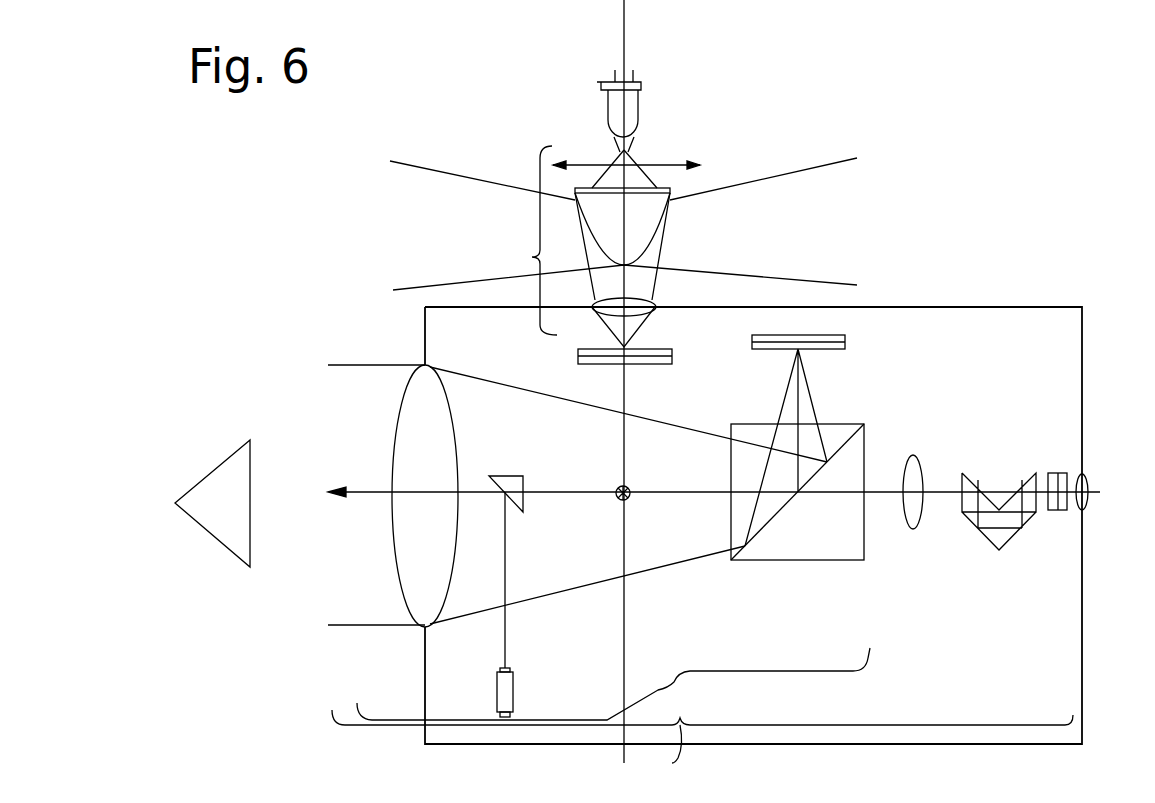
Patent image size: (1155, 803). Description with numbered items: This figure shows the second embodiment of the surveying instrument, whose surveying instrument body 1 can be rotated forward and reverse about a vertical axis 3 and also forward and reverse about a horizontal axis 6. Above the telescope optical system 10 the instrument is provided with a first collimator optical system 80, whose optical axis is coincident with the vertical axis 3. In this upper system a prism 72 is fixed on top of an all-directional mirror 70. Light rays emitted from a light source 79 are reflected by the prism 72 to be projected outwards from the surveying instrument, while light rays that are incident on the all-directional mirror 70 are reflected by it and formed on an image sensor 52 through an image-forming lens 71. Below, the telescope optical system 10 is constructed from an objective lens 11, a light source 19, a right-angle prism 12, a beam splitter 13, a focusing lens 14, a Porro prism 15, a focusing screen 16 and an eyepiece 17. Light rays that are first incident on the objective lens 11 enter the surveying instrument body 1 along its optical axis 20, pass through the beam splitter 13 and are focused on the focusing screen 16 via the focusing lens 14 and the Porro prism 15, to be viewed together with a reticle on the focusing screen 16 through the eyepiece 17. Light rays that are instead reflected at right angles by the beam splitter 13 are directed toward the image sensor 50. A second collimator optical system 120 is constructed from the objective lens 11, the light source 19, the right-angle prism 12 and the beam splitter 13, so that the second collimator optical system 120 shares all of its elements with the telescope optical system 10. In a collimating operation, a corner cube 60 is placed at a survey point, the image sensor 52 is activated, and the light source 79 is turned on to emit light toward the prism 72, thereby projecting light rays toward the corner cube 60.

The surveying instrument body 1 is at (855, 745).
The vertical axis 3 is at (626, 58).
The horizontal axis 6 is at (615, 487).
The telescope optical system 10 is at (702, 752).
The objective lens 11 is at (400, 597).
The right-angle prism 12 is at (520, 515).
The beam splitter 13 is at (864, 548).
The focusing lens 14 is at (914, 530).
The Porro prism 15 is at (990, 540).
The focusing screen 16 is at (1048, 512).
The eyepiece 17 is at (1078, 512).
The light source 19 is at (513, 672).
The optical axis 20 is at (618, 500).
The image sensor 50 is at (820, 350).
The image sensor 52 is at (655, 365).
The corner cube 60 is at (250, 555).
The all-directional mirror 70 is at (648, 247).
The image-forming lens 71 is at (655, 302).
The prism 72 is at (655, 172).
The light source 79 is at (640, 115).
The first collimator optical system 80 is at (623, 240).
The second collimator optical system 120 is at (613, 684).